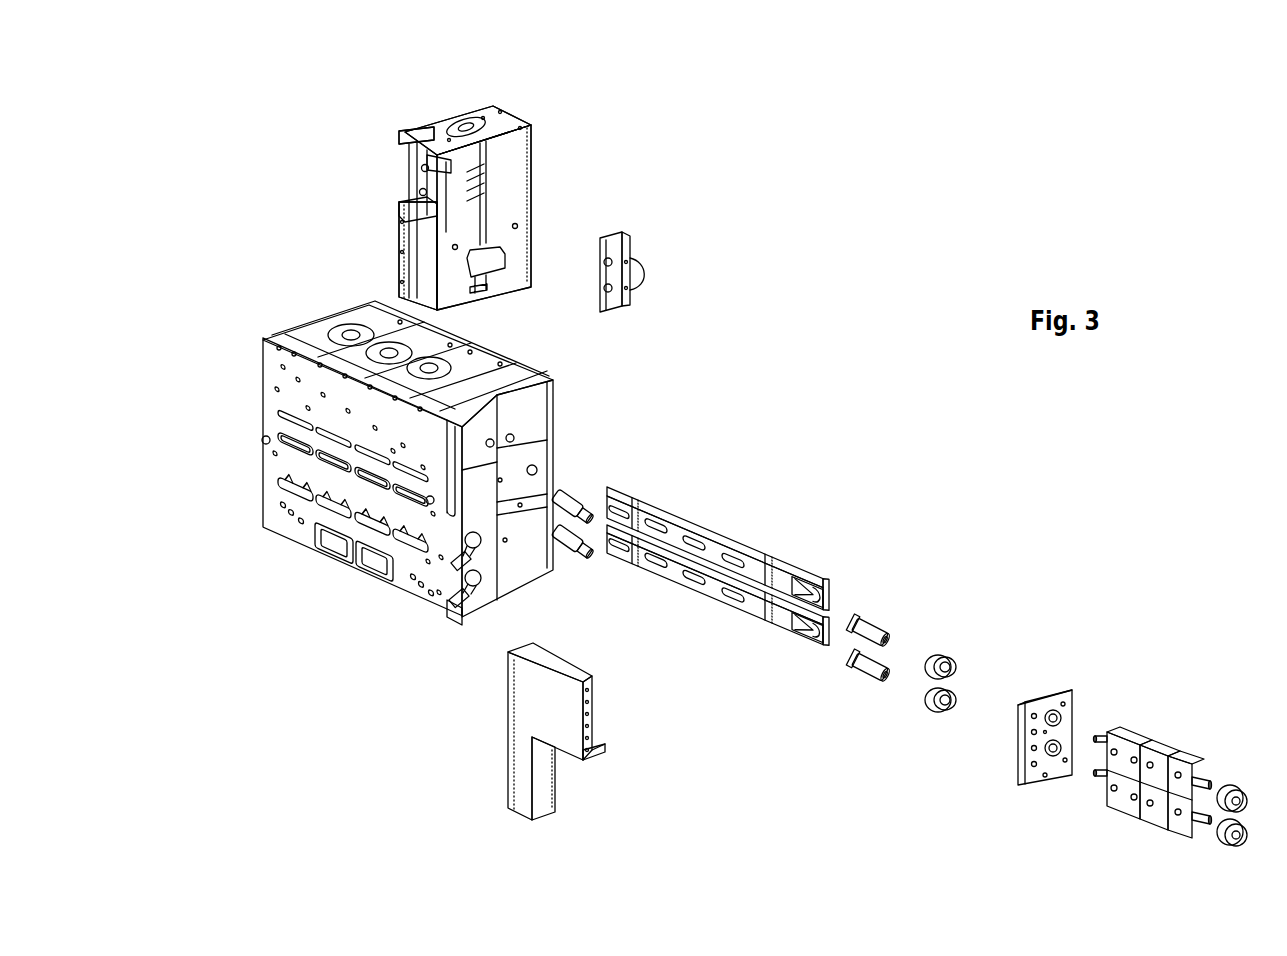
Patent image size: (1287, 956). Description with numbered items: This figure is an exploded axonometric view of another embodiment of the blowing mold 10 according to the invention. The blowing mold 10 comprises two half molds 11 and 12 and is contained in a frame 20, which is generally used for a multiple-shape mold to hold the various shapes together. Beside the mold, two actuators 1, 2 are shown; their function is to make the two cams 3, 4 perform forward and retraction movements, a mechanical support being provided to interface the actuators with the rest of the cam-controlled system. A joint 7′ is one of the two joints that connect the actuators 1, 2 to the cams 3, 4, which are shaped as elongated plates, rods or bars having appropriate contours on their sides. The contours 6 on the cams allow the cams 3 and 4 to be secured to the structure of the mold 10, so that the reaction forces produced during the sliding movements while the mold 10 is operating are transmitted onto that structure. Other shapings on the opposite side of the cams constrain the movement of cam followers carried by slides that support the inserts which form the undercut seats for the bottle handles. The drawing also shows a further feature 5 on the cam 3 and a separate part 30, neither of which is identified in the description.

The actuator 1 is at (1197, 780).
The actuator 2 is at (1193, 812).
The cam 3 is at (777, 553).
The cam 4 is at (745, 617).
The slots of upper rail 5 is at (722, 556).
The contours 6 is at (728, 592).
The joint 7′ is at (857, 628).
The blowing mold 10 is at (531, 175).
The half mold 11 is at (432, 131).
The half mold 12 is at (502, 157).
The frame 20 is at (266, 440).
The cover plate 30 is at (625, 237).